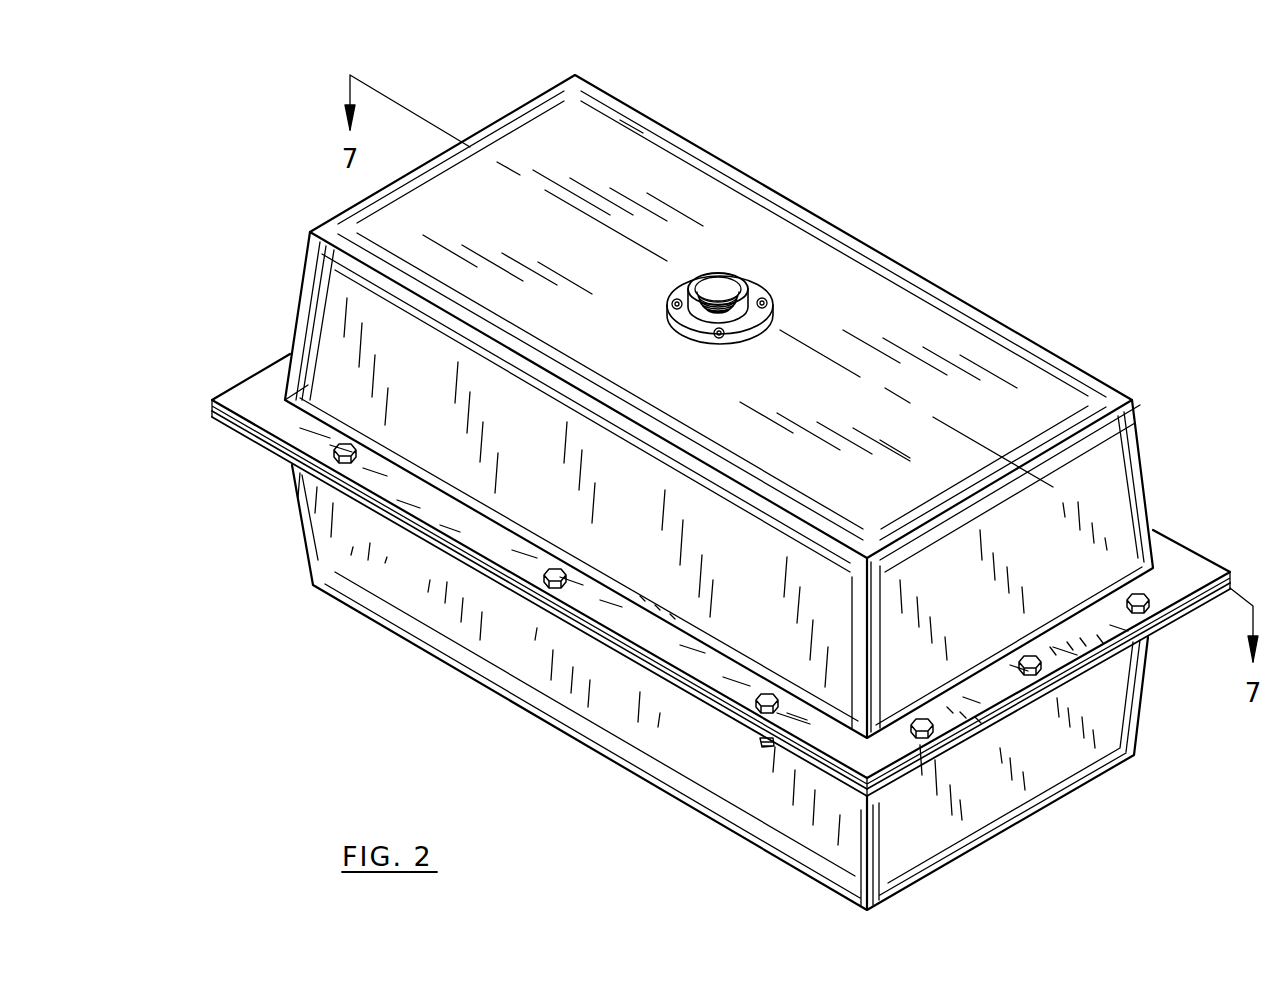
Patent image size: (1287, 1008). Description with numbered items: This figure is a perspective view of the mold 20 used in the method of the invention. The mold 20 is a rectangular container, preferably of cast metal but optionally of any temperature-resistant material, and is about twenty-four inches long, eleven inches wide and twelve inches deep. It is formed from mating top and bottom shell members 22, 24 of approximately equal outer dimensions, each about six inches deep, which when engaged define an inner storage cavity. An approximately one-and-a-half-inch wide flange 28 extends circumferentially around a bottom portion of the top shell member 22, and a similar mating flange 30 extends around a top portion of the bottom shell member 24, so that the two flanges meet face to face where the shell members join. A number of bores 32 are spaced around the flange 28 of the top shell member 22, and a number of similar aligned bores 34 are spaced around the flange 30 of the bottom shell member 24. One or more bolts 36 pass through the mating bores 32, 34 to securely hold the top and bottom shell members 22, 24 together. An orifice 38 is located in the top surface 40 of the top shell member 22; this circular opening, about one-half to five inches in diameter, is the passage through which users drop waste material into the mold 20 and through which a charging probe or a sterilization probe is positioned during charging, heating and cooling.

The mold 20 is at (313, 178).
The top shell member 22 is at (627, 147).
The bottom shell member 24 is at (1068, 765).
The flange 28 is at (263, 385).
The mating flange 30 is at (247, 437).
The bores 32 is at (552, 577).
The aligned bores 34 is at (743, 727).
The bolts 36 is at (763, 747).
The orifice 38 is at (745, 268).
The top surface 40 is at (930, 323).